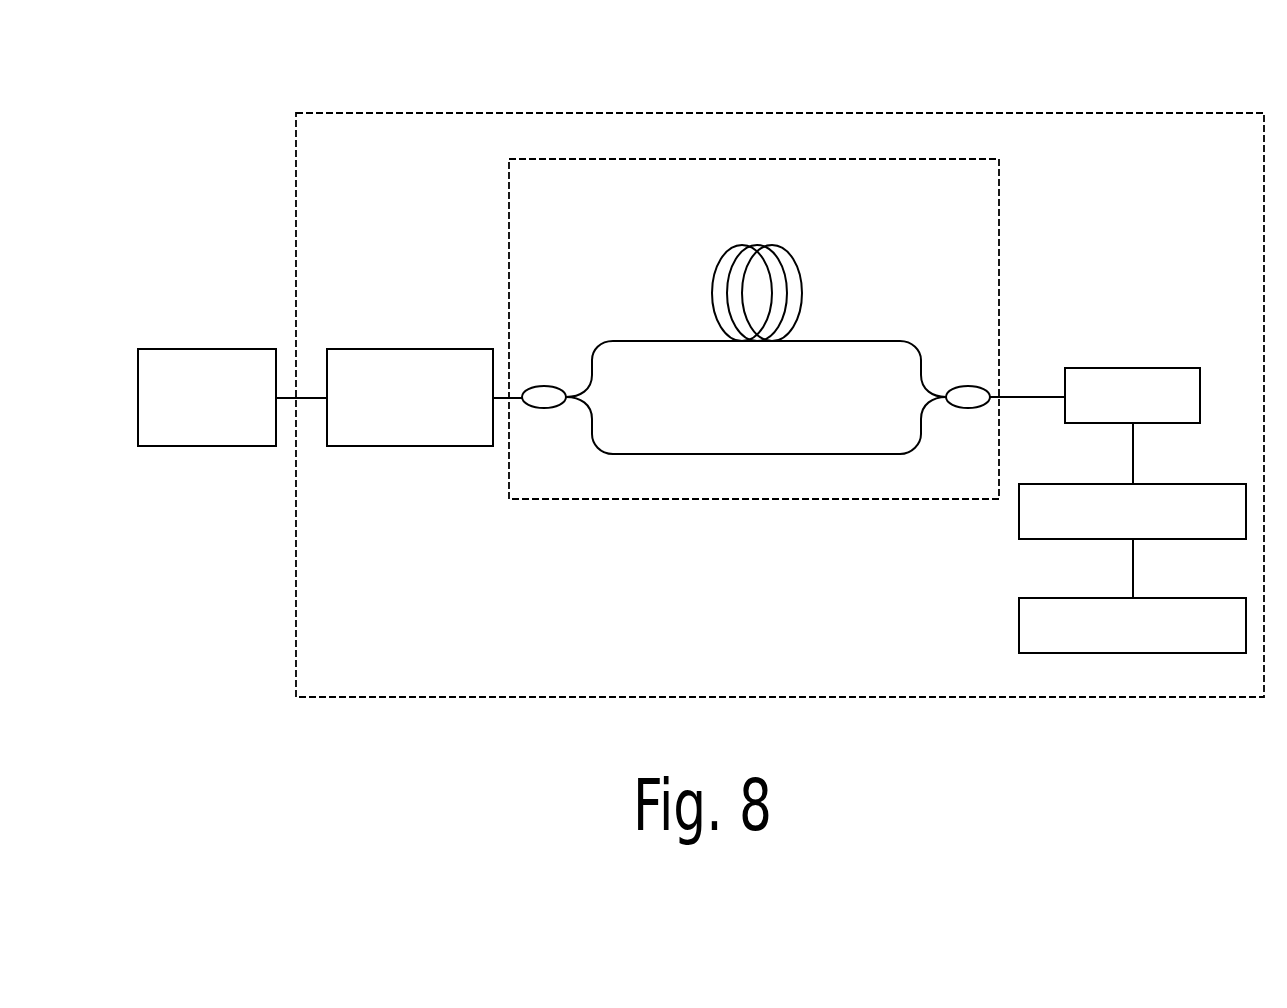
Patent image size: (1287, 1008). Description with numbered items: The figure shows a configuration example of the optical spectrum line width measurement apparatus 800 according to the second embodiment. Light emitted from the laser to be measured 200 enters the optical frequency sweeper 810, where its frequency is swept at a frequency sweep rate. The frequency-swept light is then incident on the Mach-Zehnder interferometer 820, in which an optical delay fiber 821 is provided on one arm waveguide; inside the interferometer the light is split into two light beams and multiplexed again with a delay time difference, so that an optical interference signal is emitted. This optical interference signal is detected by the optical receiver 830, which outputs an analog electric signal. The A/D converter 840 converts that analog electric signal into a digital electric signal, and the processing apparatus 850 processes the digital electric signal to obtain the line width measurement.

The optical spectrum line width measurement apparatus 800 is at (1180, 113).
The Mach-Zehnder interferometer 820 is at (903, 159).
The optical delay fiber 821 is at (785, 252).
The laser to be measured 200 is at (217, 350).
The optical frequency sweeper 810 is at (428, 350).
The optical receiver 830 is at (1140, 368).
The A/D converter 840 is at (1180, 484).
The processing apparatus 850 is at (1180, 598).